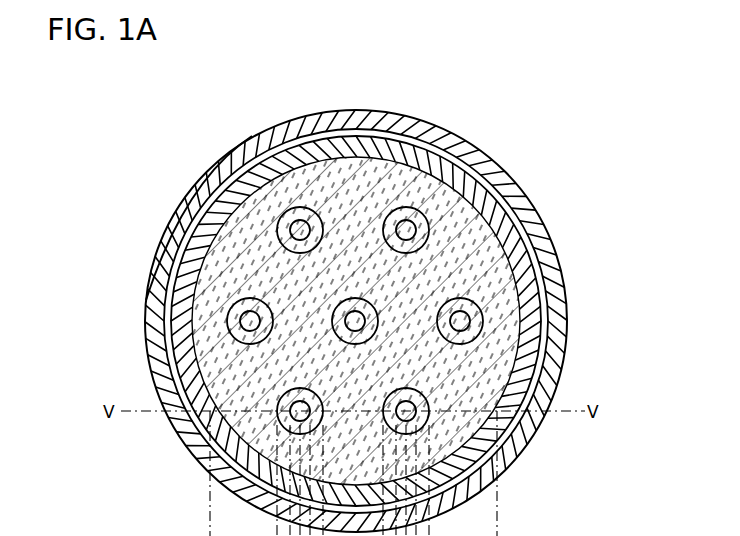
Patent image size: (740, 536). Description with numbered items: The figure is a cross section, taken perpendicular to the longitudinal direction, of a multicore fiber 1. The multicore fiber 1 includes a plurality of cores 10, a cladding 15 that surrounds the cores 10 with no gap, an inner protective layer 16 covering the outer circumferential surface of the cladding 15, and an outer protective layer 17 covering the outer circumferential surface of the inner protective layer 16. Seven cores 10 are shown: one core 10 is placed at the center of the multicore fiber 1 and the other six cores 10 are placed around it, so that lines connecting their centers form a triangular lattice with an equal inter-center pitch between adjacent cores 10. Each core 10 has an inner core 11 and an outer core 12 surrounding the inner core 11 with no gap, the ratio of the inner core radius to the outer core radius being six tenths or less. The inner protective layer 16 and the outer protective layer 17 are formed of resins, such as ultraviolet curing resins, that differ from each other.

The multicore fiber 1 is at (518, 103).
The core 10 is at (367, 254).
The inner core 11 is at (470, 321).
The outer core 12 is at (478, 306).
The cladding 15 is at (482, 250).
The inner protective layer 16 is at (500, 207).
The outer protective layer 17 is at (492, 175).